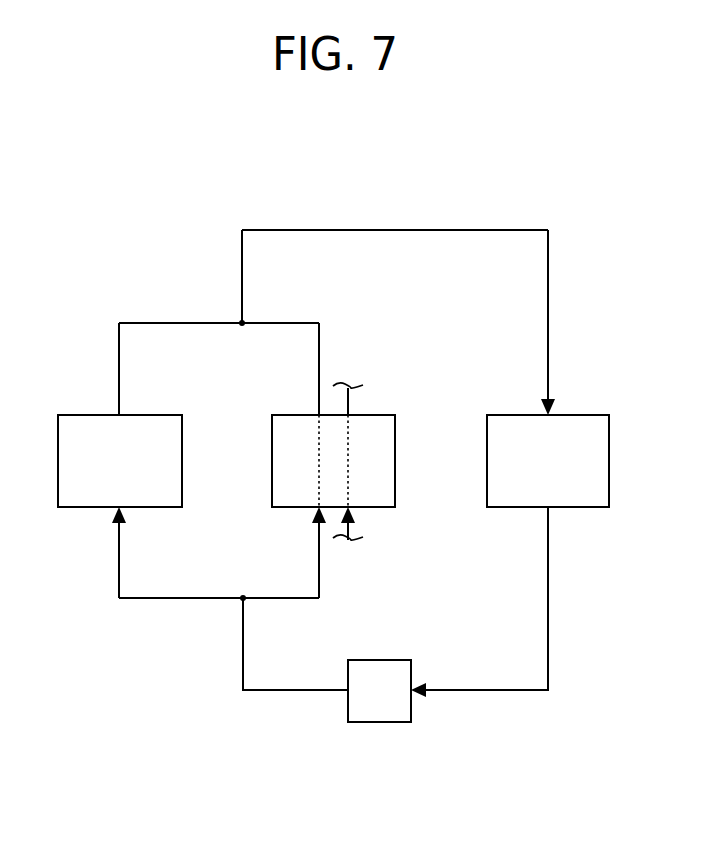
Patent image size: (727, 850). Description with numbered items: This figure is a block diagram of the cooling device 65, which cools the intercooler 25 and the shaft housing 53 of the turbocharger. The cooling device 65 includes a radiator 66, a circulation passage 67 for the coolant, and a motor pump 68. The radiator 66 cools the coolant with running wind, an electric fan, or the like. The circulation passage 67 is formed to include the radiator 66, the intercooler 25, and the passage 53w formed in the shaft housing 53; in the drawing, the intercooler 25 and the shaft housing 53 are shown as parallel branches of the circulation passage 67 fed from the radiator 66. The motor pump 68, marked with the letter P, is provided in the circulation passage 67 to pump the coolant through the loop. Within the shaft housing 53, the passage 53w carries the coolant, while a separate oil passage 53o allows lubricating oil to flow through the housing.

The intercooler 25 is at (140, 413).
The shaft housing 53 is at (378, 413).
The passage 53w is at (316, 490).
The oil passage 53o is at (351, 490).
The cooling device 65 is at (486, 200).
The radiator 66 is at (570, 413).
The circulation passage 67 is at (394, 228).
The motor pump 68 is at (379, 658).